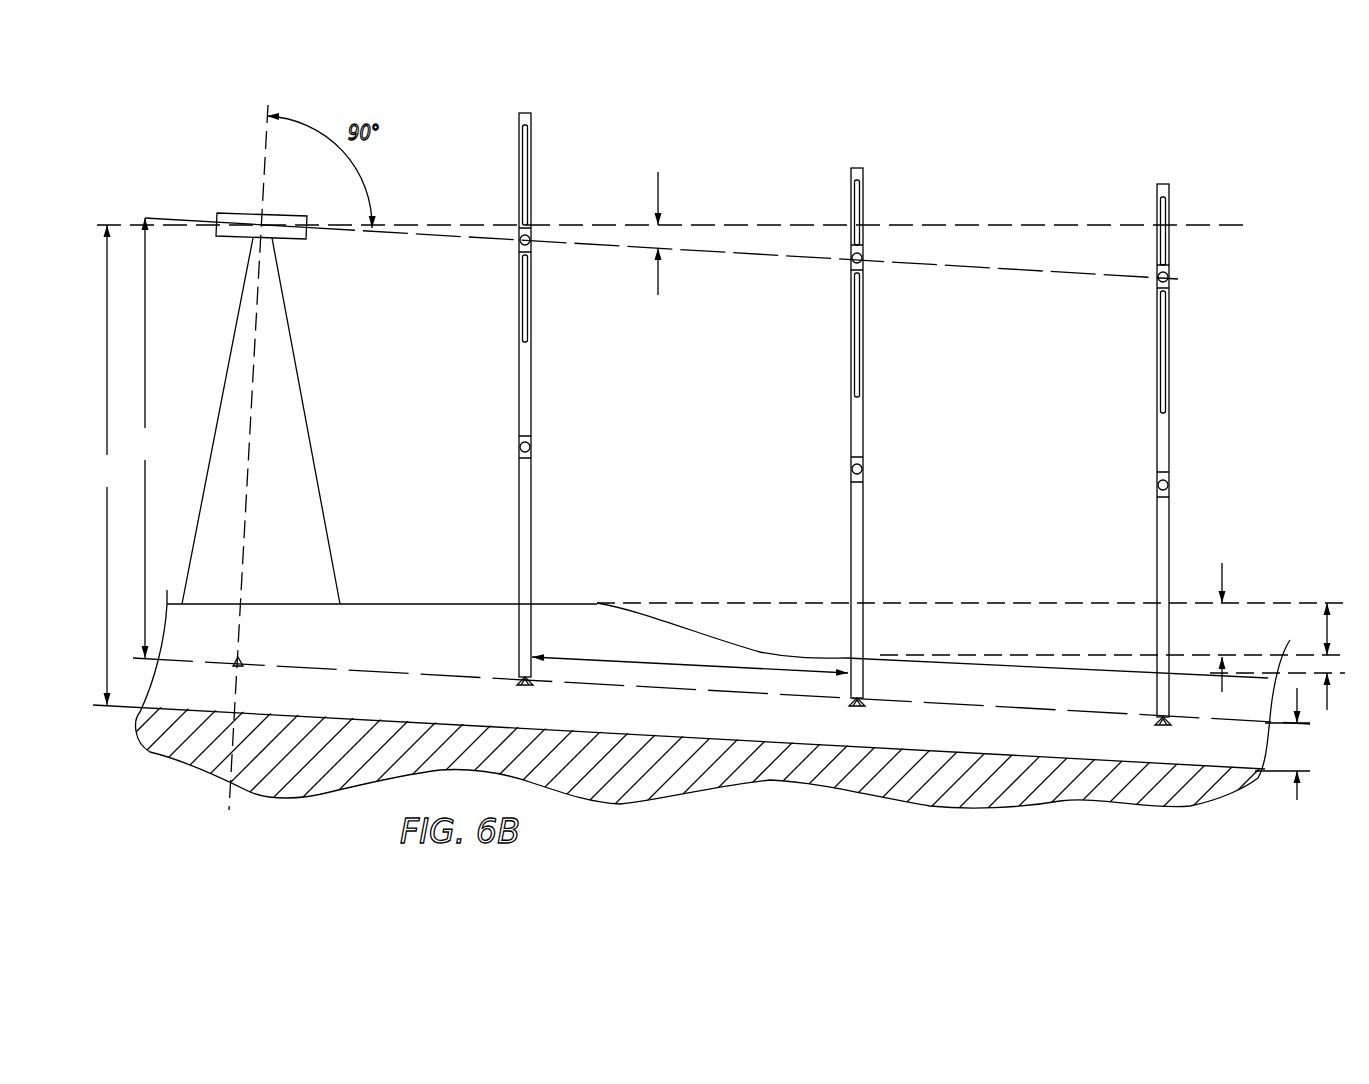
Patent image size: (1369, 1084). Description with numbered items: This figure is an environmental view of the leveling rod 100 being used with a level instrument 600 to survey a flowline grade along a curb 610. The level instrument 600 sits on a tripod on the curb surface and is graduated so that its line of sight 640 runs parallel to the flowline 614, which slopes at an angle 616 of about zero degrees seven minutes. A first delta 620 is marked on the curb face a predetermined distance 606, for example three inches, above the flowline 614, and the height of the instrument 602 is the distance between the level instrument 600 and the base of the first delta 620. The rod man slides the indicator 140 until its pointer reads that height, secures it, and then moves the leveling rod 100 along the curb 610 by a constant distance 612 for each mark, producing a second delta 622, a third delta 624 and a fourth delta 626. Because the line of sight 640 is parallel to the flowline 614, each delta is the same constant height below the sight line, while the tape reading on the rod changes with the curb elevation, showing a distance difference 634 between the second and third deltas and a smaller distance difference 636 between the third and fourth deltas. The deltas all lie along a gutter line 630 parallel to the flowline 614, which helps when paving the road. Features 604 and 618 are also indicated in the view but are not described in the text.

The leveling rod 100 is at (863, 399).
The indicator 140 is at (530, 240).
The level instrument 600 is at (218, 213).
The height of the instrument 602 is at (145, 385).
The instrument height HI FL 604 is at (107, 338).
The predetermined distance 606 is at (1316, 757).
The curb 610 is at (390, 603).
The constant distance 612 is at (633, 660).
The flowline 614 is at (215, 710).
The angle 616 is at (662, 190).
The horizontal reference plane 618 is at (473, 225).
The first delta 620 is at (240, 658).
The second delta 622 is at (520, 678).
The third delta 624 is at (866, 703).
The fourth delta 626 is at (1160, 717).
The gutter line 630 is at (385, 668).
The distance difference 634 is at (1240, 640).
The distance difference 636 is at (1325, 656).
The line of sight 640 is at (445, 236).